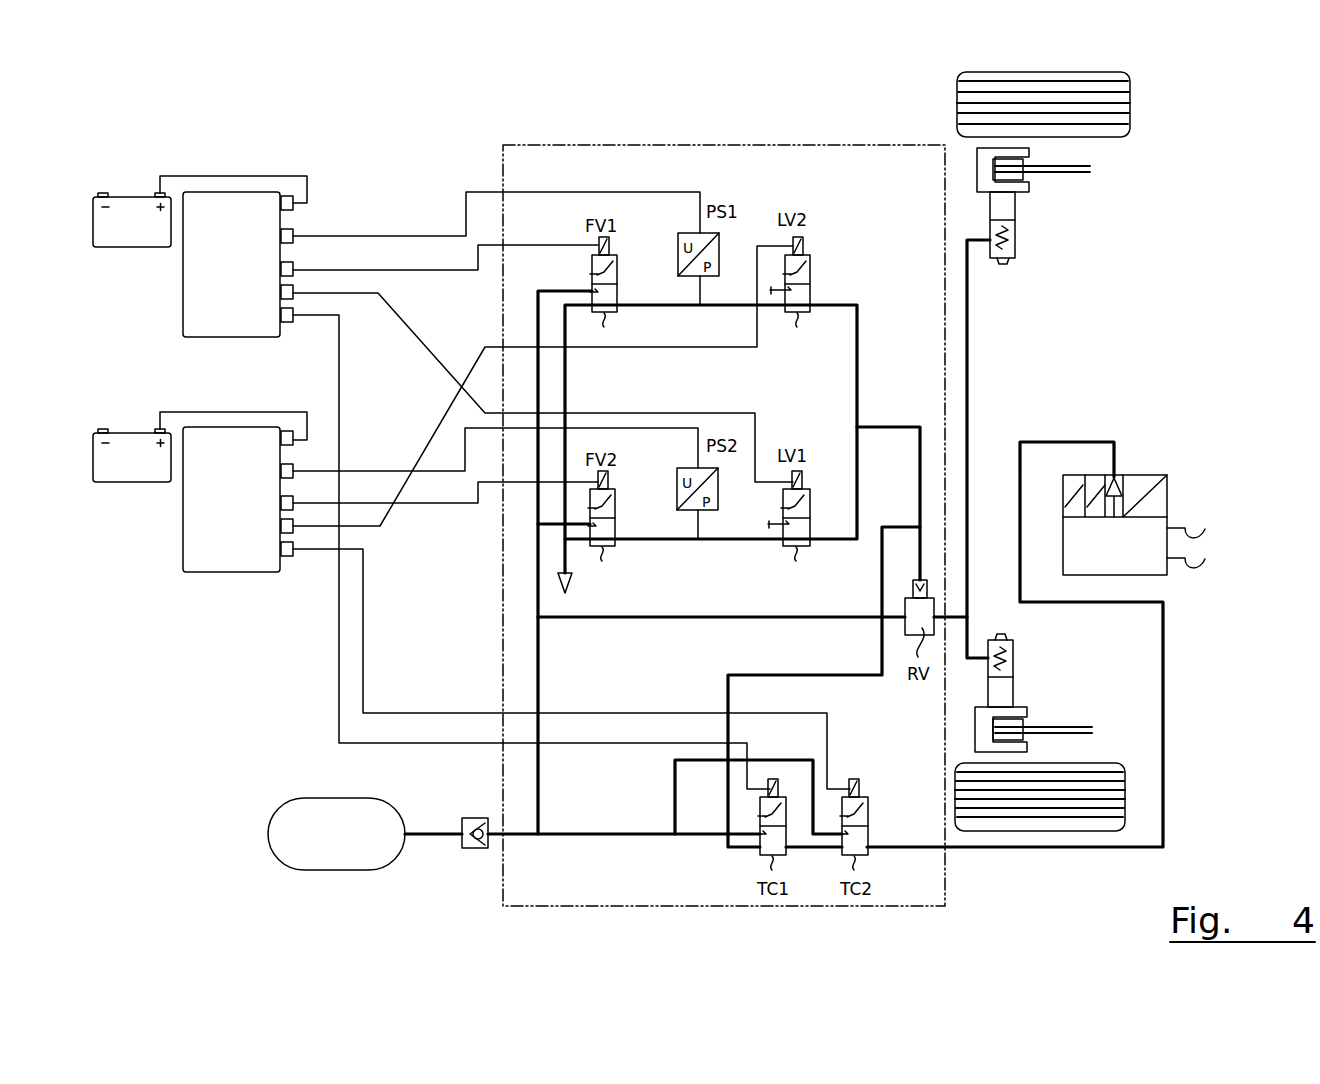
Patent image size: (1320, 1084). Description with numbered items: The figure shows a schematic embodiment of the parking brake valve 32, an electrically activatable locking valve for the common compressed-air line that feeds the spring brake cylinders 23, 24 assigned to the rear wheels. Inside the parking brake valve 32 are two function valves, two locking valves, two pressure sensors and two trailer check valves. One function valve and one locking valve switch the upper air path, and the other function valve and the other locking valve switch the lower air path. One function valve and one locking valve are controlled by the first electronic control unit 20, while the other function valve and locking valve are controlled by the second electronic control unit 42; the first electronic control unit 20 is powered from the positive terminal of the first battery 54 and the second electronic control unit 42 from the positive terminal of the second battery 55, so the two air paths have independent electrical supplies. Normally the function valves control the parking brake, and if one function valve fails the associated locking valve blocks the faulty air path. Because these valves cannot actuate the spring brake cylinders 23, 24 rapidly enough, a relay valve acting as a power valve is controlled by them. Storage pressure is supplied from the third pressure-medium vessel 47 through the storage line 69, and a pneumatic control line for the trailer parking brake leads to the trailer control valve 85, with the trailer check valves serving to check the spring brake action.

The first electronic control unit 20 is at (232, 337).
The second electronic control unit 42 is at (233, 572).
The first battery 54 is at (127, 247).
The second battery 55 is at (127, 482).
The parking brake valve 32 is at (712, 148).
The spring brake cylinder 23 is at (1013, 218).
The spring brake cylinder 24 is at (1013, 686).
The trailer control valve 85 is at (1143, 475).
The third pressure-medium vessel 47 is at (329, 808).
The storage line 69 is at (437, 832).